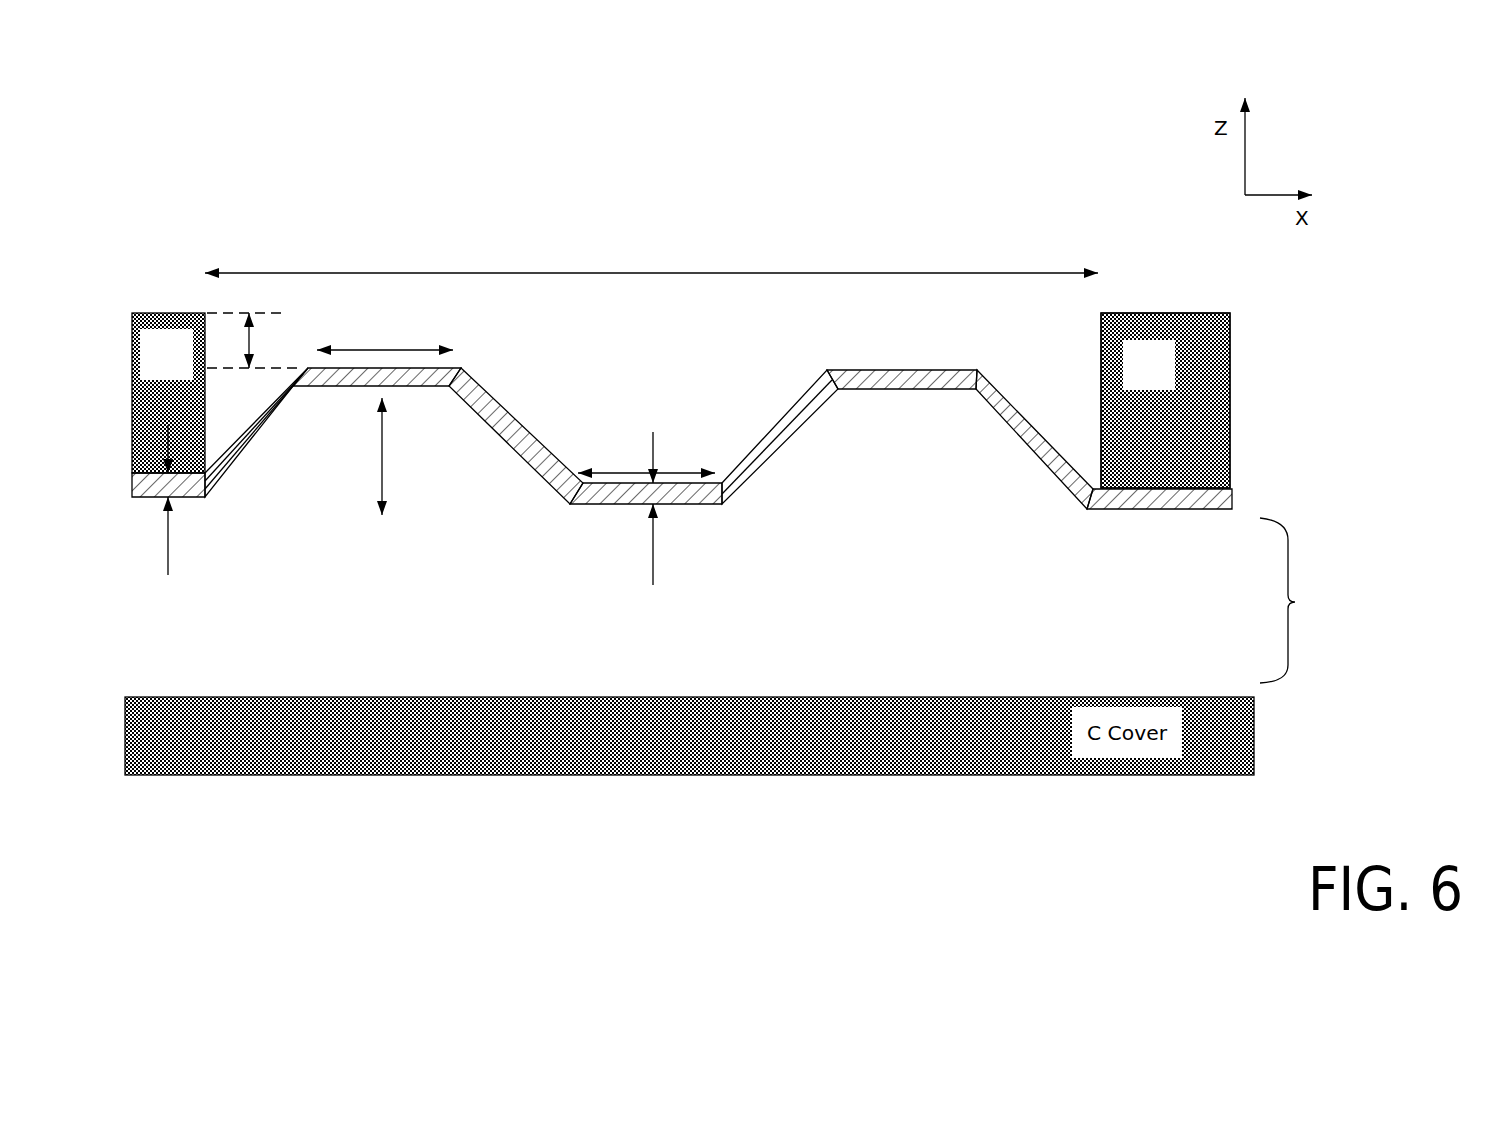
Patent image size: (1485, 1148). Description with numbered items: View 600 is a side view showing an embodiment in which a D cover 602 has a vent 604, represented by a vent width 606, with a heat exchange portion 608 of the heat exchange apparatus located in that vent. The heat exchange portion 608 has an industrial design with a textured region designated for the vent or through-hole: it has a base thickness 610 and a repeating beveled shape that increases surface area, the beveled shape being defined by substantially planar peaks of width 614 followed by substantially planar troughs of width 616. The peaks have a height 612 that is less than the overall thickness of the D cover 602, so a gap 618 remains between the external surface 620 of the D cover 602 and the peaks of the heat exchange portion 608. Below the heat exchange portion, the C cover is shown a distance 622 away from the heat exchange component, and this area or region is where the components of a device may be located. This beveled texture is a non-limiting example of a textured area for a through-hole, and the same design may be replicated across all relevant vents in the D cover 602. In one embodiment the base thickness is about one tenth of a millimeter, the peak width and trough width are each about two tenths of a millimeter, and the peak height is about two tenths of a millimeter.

The view 600 is at (122, 150).
The D cover 602 is at (183, 365).
The vent 604 is at (682, 328).
The vent width 606 is at (622, 273).
The heat exchange portion 608 is at (803, 423).
The base thickness 610 is at (168, 530).
The height 612 is at (383, 463).
The width 614 is at (382, 346).
The width 616 is at (608, 468).
The gap 618 is at (251, 336).
The external surface 620 is at (1143, 313).
The distance 622 is at (1290, 602).